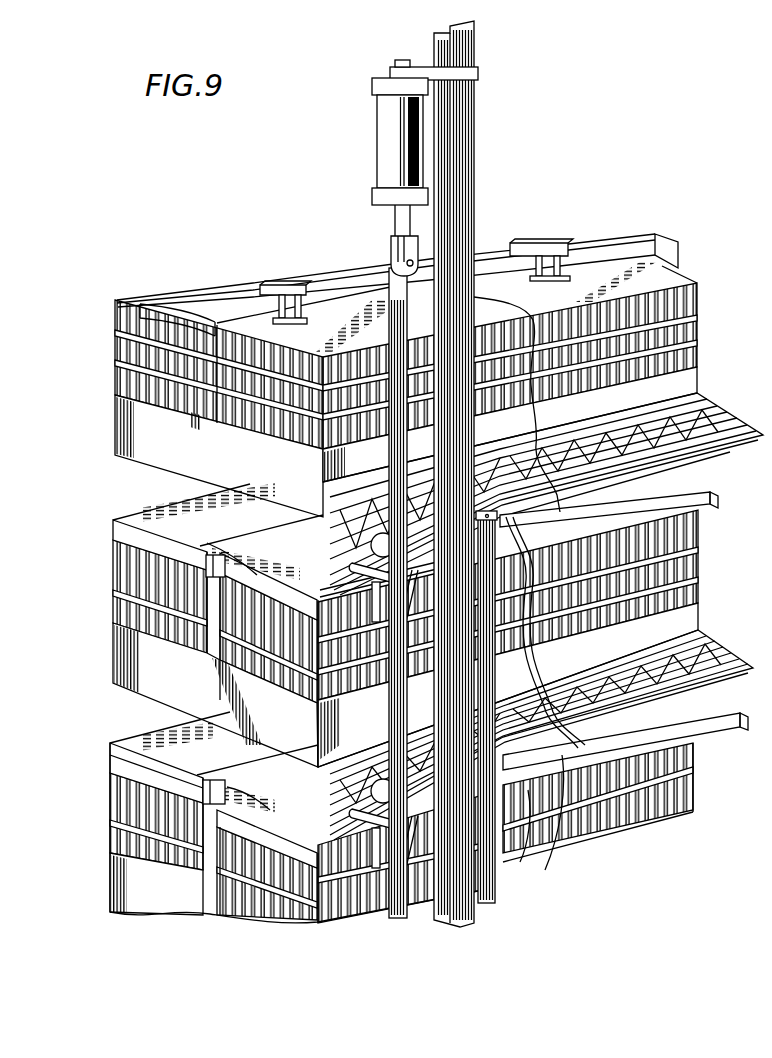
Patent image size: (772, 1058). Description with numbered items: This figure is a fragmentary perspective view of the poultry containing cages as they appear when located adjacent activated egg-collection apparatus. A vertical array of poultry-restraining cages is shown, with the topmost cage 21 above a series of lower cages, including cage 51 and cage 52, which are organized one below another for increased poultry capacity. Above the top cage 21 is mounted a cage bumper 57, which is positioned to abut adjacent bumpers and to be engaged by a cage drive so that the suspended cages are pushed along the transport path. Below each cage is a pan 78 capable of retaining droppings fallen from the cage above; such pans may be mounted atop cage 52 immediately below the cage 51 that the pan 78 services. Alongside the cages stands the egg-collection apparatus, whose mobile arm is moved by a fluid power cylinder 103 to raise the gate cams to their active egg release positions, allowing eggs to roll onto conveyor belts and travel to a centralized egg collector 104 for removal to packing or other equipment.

The cage 21 is at (276, 492).
The cage 51 is at (193, 690).
The cage 52 is at (148, 900).
The cage bumper 57 is at (257, 285).
The pan 78 is at (187, 533).
The fluid power cylinder 103 is at (388, 143).
The centralized egg collector 104 is at (390, 298).